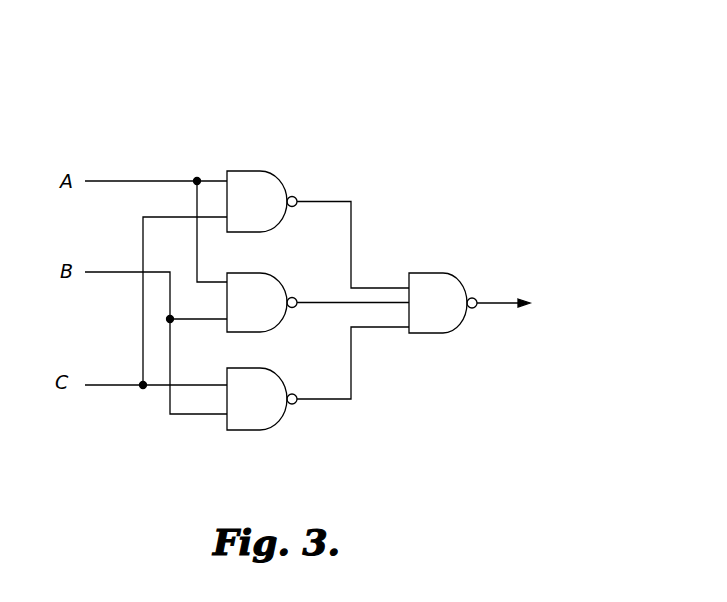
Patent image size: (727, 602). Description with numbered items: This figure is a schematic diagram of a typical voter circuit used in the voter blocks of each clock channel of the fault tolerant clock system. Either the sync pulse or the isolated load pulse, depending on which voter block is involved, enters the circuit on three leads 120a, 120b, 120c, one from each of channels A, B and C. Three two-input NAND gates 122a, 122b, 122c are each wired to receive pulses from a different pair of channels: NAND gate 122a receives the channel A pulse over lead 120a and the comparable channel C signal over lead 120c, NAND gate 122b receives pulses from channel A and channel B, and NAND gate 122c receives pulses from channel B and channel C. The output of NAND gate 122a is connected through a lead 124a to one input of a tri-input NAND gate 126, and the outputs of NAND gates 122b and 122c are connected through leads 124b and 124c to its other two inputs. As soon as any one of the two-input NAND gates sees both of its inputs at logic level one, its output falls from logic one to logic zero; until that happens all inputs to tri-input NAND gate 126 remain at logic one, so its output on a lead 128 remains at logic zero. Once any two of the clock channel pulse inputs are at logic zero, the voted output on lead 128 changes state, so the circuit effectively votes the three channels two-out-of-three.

The lead 120a is at (100, 180).
The lead 120b is at (99, 270).
The lead 120c is at (96, 380).
The NAND gate 122a is at (265, 171).
The NAND gate 122b is at (265, 273).
The NAND gate 122c is at (265, 368).
The lead 124a is at (352, 235).
The lead 124b is at (317, 300).
The lead 124c is at (352, 383).
The tri-input NAND gate 126 is at (450, 276).
The lead 128 is at (490, 308).